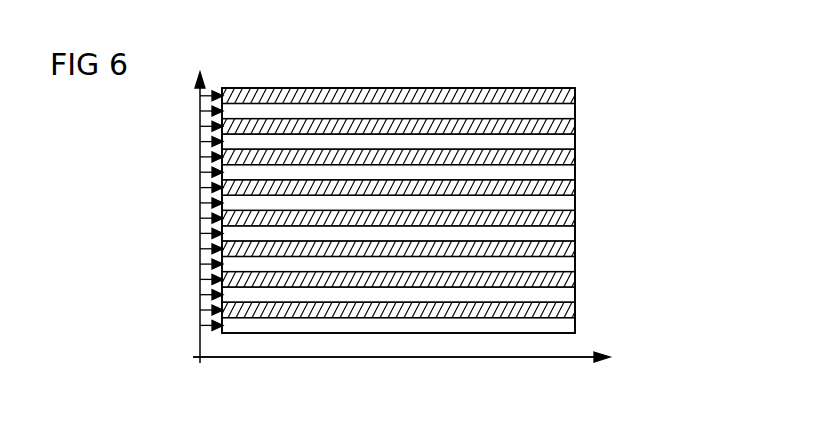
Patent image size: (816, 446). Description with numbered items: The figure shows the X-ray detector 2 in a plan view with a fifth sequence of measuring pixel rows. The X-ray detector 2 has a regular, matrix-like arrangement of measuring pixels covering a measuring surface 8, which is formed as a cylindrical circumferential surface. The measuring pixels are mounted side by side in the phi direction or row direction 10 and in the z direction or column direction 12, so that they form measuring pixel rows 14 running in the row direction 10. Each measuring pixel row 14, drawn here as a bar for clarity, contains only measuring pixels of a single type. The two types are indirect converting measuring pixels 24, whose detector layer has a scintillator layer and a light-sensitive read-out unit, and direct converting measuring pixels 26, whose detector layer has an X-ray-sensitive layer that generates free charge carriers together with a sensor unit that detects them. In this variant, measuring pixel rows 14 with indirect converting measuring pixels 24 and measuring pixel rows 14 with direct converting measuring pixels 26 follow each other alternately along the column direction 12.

The X-ray detector 2 is at (690, 189).
The measuring surface 8 is at (478, 122).
The row direction 10 is at (330, 358).
The column direction 12 is at (195, 345).
The measuring pixel rows 14 is at (200, 96).
The indirect converting measuring pixels 24 is at (567, 111).
The direct converting measuring pixels 26 is at (567, 96).